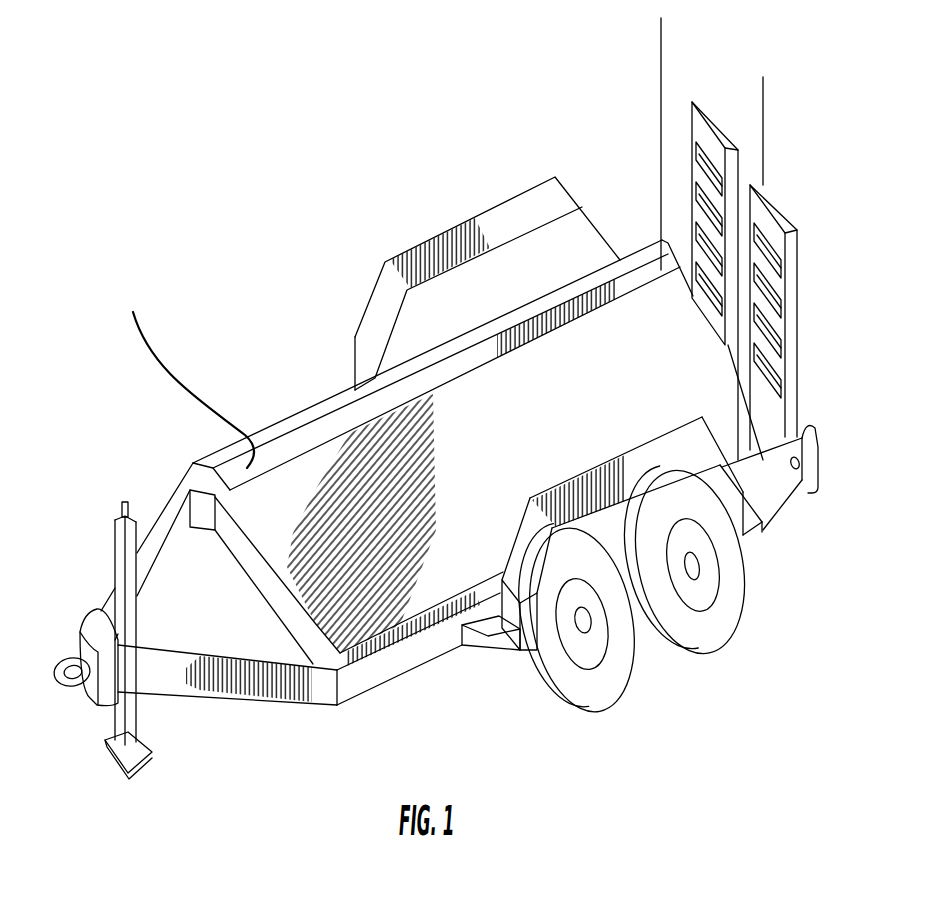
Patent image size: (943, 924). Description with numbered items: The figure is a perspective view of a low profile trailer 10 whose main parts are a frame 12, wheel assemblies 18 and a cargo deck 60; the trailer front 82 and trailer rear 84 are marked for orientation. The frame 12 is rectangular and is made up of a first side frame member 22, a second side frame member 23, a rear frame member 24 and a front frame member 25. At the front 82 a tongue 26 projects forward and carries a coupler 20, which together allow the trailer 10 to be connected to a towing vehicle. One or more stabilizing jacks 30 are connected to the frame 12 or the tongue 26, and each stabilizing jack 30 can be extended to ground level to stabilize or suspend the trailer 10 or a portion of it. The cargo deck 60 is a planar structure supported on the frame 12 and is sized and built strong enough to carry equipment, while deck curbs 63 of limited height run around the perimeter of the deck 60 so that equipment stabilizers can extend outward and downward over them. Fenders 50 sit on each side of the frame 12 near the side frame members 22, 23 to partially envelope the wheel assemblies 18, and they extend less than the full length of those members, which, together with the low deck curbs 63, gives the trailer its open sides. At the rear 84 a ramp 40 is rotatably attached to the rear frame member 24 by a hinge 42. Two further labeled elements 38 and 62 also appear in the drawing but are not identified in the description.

The low profile trailer 10 is at (317, 287).
The frame 12 is at (284, 424).
The wheel assemblies 18 is at (543, 712).
The coupler 20 is at (68, 662).
The first side frame member 22 is at (400, 665).
The second side frame member 23 is at (350, 387).
The rear frame member 24 is at (806, 430).
The front frame member 25 is at (313, 627).
The tongue 26 is at (243, 688).
The stabilizing jack 30 is at (118, 557).
The first ramp stand 38 is at (758, 153).
The ramp 40 is at (792, 338).
The hinge 42 is at (797, 473).
The fenders 50 is at (453, 232).
The cargo deck 60 is at (463, 597).
The deck 62 is at (622, 401).
The deck curbs 63 is at (183, 372).
The trailer front 82 is at (137, 421).
The trailer rear 84 is at (782, 173).